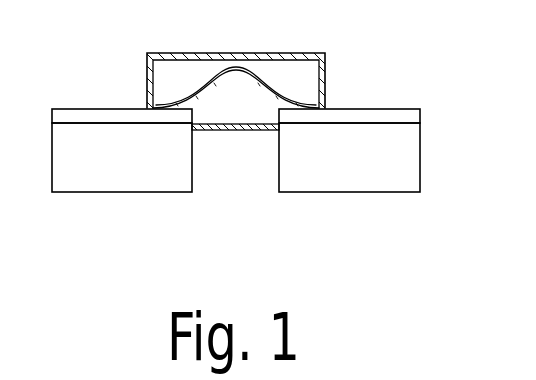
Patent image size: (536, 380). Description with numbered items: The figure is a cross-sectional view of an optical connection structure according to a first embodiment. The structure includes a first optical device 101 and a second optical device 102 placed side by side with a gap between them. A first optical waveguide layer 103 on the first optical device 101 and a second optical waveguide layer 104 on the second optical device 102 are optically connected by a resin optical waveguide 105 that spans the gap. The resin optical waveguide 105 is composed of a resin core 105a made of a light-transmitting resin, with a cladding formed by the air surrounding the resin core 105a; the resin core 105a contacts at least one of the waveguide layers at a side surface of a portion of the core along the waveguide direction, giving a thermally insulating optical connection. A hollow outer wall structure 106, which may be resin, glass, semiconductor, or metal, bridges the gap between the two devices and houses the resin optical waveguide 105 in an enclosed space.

The first optical device 101 is at (122, 192).
The second optical device 102 is at (352, 192).
The first optical waveguide layer 103 is at (67, 108).
The second optical waveguide layer 104 is at (400, 108).
The resin optical waveguide 105 is at (234, 53).
The resin core 105a is at (237, 71).
The outer wall structure 106 is at (234, 130).